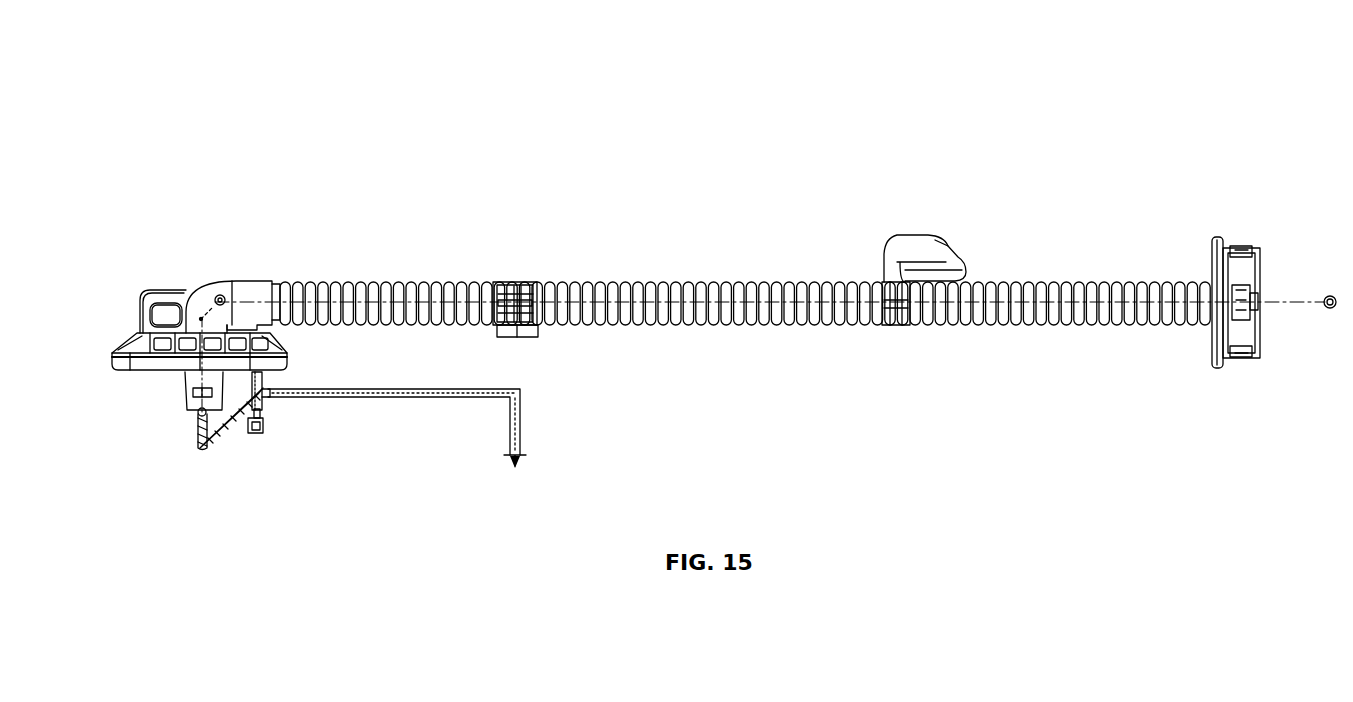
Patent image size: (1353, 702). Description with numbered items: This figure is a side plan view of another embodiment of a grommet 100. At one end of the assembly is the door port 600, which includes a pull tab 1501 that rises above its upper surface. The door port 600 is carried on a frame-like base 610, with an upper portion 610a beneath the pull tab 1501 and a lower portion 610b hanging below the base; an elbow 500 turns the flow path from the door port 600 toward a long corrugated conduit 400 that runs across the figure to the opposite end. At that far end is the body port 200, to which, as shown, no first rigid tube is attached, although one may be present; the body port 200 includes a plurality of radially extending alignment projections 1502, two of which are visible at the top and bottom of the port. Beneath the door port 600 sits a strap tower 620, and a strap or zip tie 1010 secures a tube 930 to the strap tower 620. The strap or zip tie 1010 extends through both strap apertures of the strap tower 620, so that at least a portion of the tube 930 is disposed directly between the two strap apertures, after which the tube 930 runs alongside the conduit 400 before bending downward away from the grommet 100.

The grommet 100 is at (845, 93).
The body port 200 is at (1279, 307).
The conduit 400 is at (362, 282).
The elbow 500 is at (222, 284).
The door port 600 is at (194, 322).
The mask frame 610 is at (137, 363).
The upper frame portion 610a is at (250, 336).
The lower frame portion 610b is at (186, 352).
The strap tower 620 is at (265, 386).
The tube 930 is at (457, 392).
The strap or zip tie 1010 is at (268, 427).
The pull tab 1501 is at (178, 292).
The alignment projections 1502 is at (1243, 247).